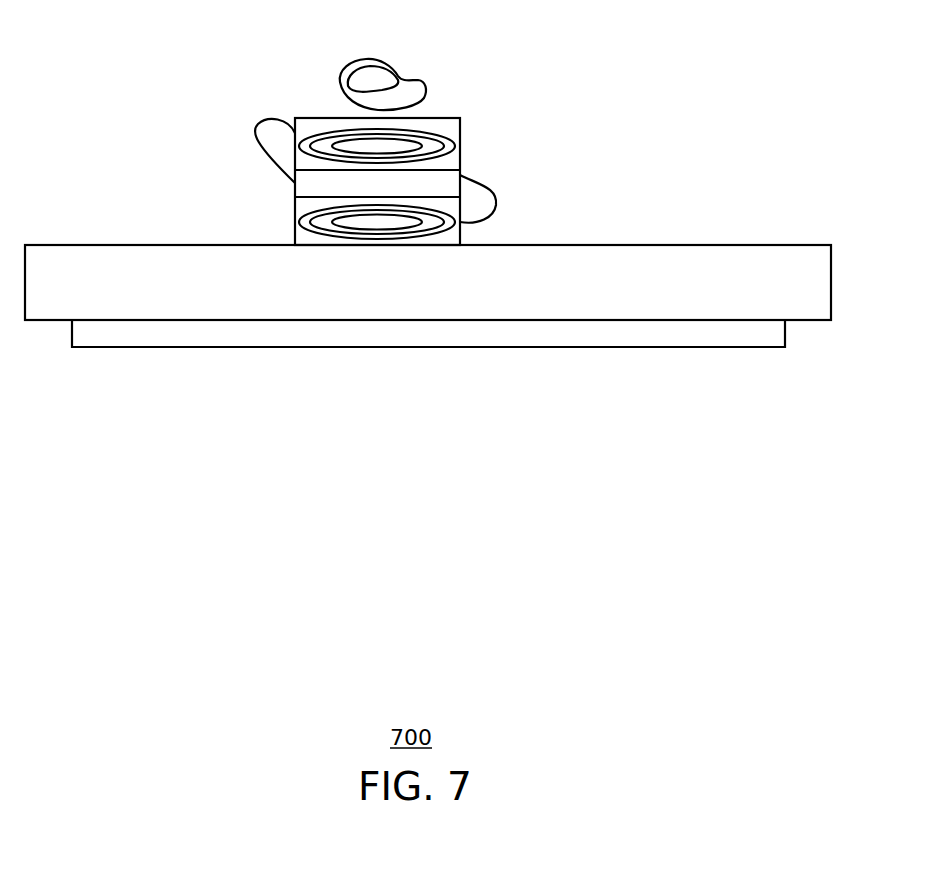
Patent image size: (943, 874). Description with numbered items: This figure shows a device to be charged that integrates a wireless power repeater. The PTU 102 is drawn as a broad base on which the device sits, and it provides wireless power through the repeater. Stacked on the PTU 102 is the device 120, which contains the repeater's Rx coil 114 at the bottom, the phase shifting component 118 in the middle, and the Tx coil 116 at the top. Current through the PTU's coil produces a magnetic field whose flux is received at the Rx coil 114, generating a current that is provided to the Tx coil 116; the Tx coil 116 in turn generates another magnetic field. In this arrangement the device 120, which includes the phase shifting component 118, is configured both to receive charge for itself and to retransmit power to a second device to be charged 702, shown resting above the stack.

The PTU 102 is at (452, 348).
The Rx coil 114 is at (403, 258).
The Tx coil 116 is at (406, 213).
The phase shifting component 118 is at (451, 150).
The device 120 is at (474, 168).
The second device to be charged 702 is at (445, 105).